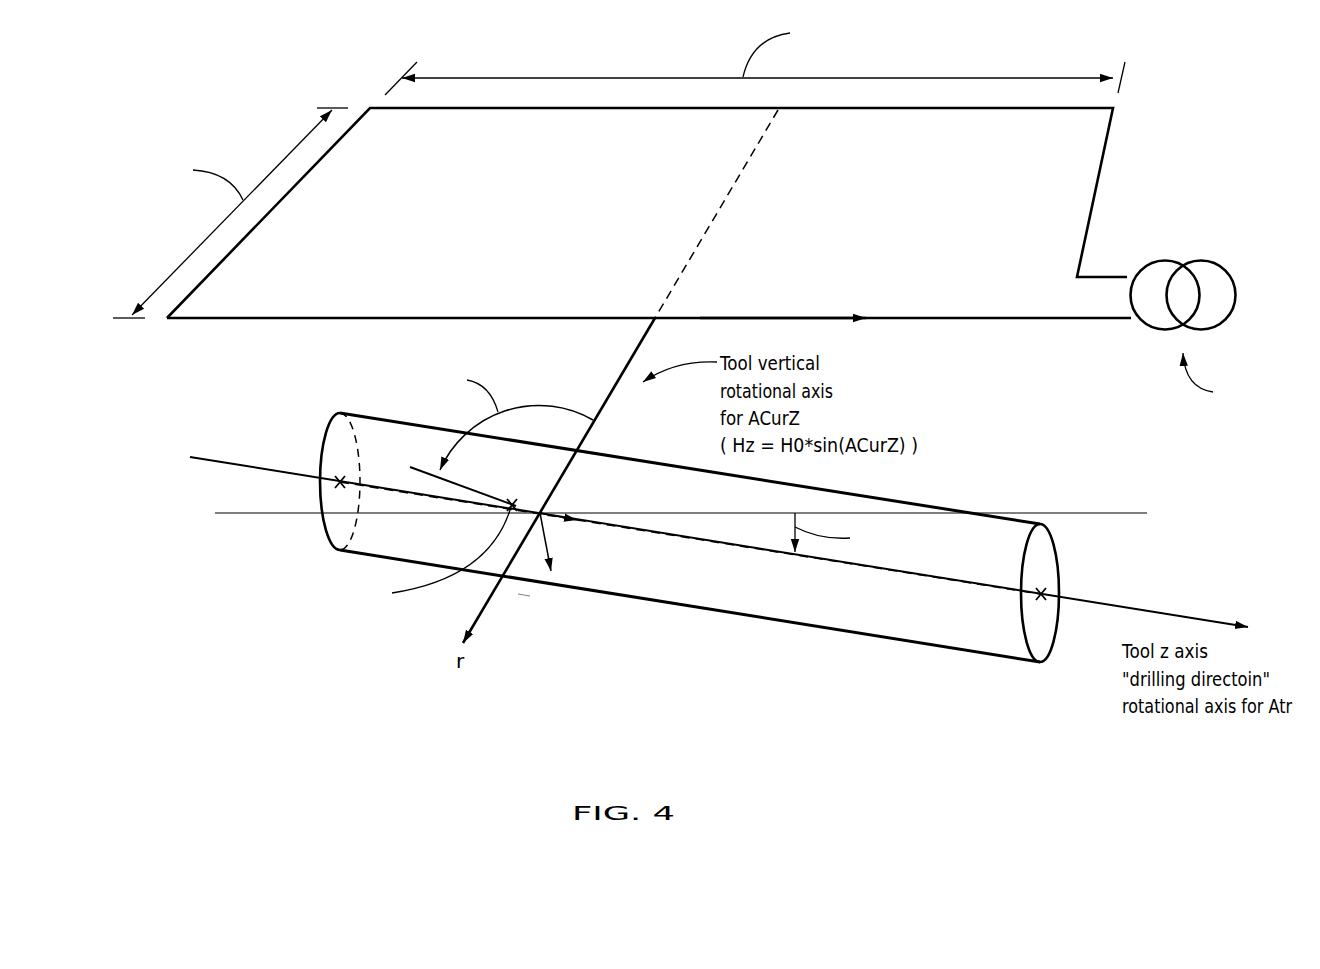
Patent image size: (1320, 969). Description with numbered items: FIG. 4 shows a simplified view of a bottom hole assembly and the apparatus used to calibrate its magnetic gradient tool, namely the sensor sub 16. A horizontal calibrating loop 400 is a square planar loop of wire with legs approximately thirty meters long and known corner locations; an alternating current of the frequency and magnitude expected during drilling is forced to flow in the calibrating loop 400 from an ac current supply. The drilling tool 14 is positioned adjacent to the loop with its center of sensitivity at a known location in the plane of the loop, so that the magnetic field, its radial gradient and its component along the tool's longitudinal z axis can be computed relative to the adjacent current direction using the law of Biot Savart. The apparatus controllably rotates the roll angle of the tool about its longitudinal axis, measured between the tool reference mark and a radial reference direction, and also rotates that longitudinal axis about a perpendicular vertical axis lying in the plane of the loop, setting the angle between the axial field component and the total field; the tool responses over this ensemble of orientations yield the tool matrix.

The calibration loop 400 is at (1125, 180).
The tool 14 is at (866, 637).
The sensor sub 16 is at (523, 595).